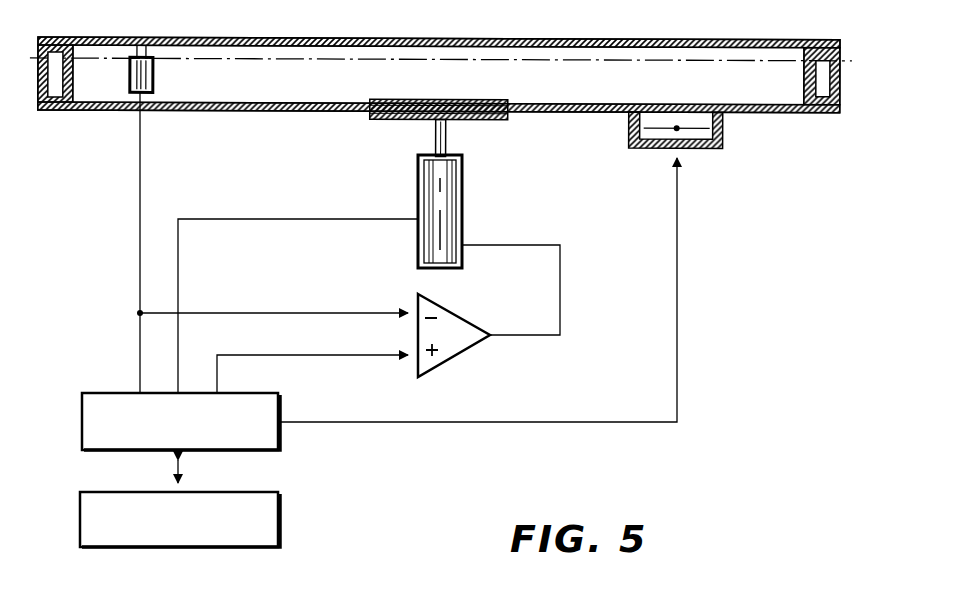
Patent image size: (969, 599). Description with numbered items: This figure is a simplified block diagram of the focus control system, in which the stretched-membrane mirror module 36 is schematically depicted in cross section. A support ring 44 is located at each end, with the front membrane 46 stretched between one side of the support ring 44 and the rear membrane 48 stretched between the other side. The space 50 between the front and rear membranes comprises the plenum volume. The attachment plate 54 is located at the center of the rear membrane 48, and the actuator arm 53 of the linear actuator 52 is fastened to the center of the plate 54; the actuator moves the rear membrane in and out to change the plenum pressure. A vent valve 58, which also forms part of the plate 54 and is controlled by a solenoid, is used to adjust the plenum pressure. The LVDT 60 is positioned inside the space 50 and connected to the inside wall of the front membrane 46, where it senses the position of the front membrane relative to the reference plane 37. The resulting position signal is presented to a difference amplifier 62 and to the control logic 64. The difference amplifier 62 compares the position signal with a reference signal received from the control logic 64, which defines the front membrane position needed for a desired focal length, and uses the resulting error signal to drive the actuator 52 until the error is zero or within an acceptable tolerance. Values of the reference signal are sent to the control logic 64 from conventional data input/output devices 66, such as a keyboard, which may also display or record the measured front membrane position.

The stretched-membrane mirror module 36 is at (110, 30).
The reference plane 37 is at (672, 60).
The support ring 44 is at (40, 100).
The front membrane 46 is at (690, 20).
The rear membrane 48 is at (204, 110).
The plenum space 50 is at (308, 68).
The linear actuator 52 is at (462, 186).
The actuator arm 53 is at (446, 136).
The attachment plate 54 is at (420, 118).
The vent valve 58 is at (706, 147).
The linear variable differential transformer (LVDT) 60 is at (153, 75).
The difference amplifier 62 is at (466, 318).
The control logic 64 is at (306, 400).
The data input/output (I/O) devices 66 is at (280, 496).